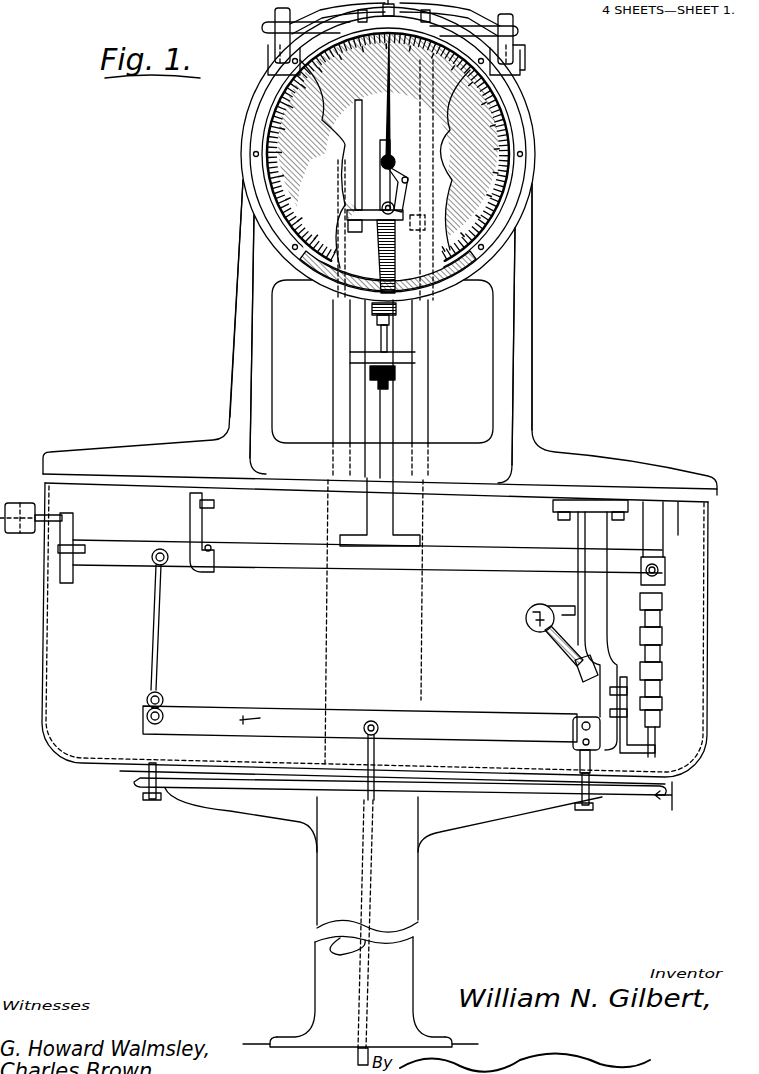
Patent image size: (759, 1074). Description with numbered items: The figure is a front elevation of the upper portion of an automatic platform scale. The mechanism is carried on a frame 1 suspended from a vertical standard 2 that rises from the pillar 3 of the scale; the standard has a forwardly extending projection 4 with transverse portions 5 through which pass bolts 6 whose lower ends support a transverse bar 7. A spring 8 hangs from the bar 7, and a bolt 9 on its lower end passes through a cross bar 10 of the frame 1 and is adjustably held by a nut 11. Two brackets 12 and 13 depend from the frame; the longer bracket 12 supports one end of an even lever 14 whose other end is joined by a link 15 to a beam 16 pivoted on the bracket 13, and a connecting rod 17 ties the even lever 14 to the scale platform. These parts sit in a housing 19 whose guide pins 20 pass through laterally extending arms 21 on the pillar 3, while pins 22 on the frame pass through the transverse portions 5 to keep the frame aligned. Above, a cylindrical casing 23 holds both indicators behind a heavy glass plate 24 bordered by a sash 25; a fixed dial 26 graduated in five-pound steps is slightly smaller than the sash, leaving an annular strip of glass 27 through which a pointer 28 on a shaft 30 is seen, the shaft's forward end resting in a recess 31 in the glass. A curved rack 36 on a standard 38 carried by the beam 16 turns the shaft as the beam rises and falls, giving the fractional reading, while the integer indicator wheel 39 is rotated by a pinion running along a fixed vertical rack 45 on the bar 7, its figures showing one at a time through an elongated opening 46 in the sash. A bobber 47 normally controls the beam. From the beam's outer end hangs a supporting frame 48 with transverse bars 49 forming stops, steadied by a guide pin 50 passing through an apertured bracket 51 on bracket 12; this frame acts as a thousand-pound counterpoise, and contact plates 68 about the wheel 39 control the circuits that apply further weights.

The frame 1 is at (527, 407).
The vertical standard 2 is at (430, 441).
The pillar 3 is at (410, 872).
The forwardly extending projection 4 is at (393, 8).
The transverse portions 5 is at (322, 20).
The bolts 6 is at (357, 197).
The transverse bar 7 is at (238, 348).
The spring 8 is at (383, 252).
The bolt 9 is at (390, 343).
The cross bar 10 is at (355, 357).
The nut 11 is at (398, 372).
The bracket 12 is at (578, 537).
The bracket 13 is at (203, 525).
The even lever 14 is at (410, 722).
The link 15 is at (160, 634).
The beam 16 is at (270, 548).
The connecting rod 17 is at (378, 747).
The housing 19 is at (43, 735).
The guide pins 20 is at (147, 779).
The laterally extending arms 21 is at (293, 790).
The pins 22 is at (268, 36).
The casing 23 is at (370, 309).
The glass plate 24 is at (296, 166).
The sash 25 is at (522, 92).
The dial 26 is at (262, 183).
The annular strip of glass 27 is at (510, 134).
The pointer 28 is at (396, 150).
The shaft 30 is at (398, 167).
The recess 31 is at (412, 200).
The rack 36 is at (378, 170).
The standard 38 is at (393, 410).
The indicator wheel 39 is at (430, 246).
The vertical rack 45 is at (366, 164).
The elongated opening 46 is at (527, 58).
The bobber 47 is at (560, 640).
The supporting frame 48 is at (662, 664).
The transverse bars 49 is at (660, 622).
The guide pin 50 is at (658, 735).
The apertured bracket 51 is at (630, 752).
The contact plates 68 is at (320, 288).